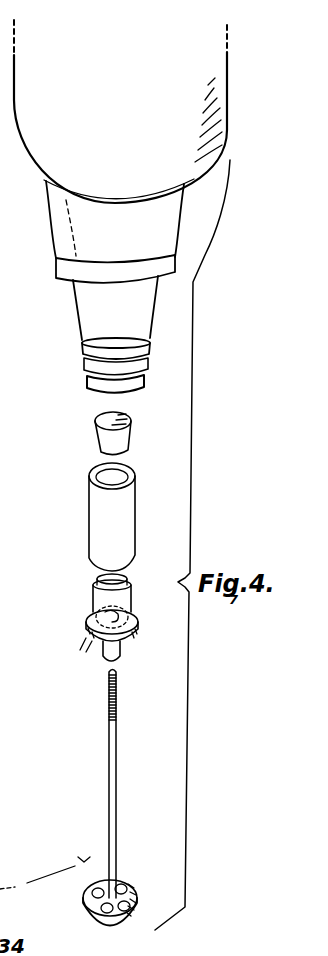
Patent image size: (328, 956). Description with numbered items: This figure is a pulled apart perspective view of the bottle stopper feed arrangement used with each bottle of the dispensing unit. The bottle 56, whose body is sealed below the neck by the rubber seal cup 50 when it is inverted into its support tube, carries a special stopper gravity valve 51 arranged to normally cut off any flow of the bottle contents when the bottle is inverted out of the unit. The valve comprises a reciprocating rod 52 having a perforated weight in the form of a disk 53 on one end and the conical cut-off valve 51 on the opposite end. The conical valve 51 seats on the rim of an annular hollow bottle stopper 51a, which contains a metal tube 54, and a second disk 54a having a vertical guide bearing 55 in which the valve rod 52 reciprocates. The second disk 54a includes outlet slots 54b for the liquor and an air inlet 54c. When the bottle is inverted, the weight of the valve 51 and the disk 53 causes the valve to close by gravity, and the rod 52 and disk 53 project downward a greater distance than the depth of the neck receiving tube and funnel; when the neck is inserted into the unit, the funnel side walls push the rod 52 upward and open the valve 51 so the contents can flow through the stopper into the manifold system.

The rubber seal cup 50 is at (62, 237).
The conical cut-off valve 51 is at (131, 438).
The annular hollow bottle stopper 51a is at (127, 528).
The reciprocating rod 52 is at (115, 770).
The perforated weight disk 53 is at (130, 883).
The metal tube 54 is at (125, 593).
The second disk 54a is at (135, 630).
The outlet slots 54b is at (83, 643).
The air inlet 54c is at (132, 617).
The vertical guide bearing 55 is at (120, 658).
The bottle 56 is at (122, 150).